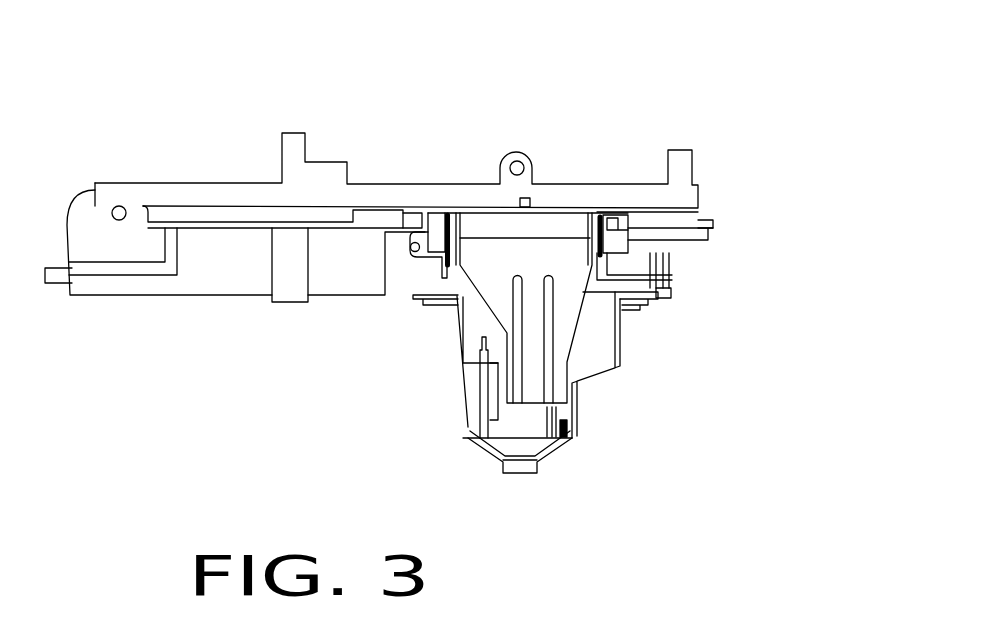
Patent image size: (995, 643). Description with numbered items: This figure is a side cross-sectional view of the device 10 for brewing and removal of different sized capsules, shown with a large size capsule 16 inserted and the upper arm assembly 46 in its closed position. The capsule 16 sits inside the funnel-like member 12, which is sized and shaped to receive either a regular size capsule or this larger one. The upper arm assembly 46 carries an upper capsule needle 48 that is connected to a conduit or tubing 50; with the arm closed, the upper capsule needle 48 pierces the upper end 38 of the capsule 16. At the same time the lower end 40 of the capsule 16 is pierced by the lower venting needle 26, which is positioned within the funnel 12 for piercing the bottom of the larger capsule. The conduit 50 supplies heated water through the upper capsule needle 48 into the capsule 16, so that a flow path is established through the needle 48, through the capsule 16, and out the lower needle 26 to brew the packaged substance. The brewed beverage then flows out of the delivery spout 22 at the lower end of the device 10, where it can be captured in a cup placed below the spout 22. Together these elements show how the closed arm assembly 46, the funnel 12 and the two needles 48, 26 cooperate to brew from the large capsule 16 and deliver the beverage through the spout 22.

The device for brewing and removal of different sized capsules 10 is at (350, 324).
The funnel-like member 12 is at (655, 341).
The large size capsule 16 is at (537, 326).
The delivery spout 22 is at (530, 474).
The lower venting probe or needle 26 is at (573, 406).
The upper end 38 is at (478, 206).
The lower end 40 is at (524, 406).
The upper arm assembly 46 is at (430, 140).
The upper capsule needle 48 is at (531, 201).
The conduit or tubing 50 is at (374, 196).